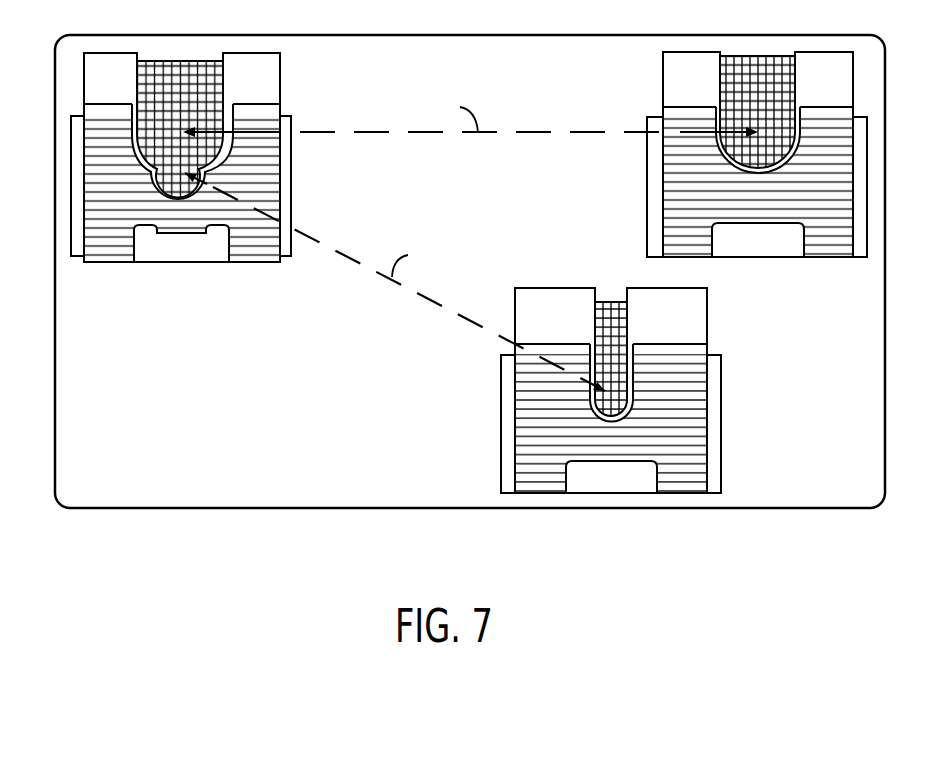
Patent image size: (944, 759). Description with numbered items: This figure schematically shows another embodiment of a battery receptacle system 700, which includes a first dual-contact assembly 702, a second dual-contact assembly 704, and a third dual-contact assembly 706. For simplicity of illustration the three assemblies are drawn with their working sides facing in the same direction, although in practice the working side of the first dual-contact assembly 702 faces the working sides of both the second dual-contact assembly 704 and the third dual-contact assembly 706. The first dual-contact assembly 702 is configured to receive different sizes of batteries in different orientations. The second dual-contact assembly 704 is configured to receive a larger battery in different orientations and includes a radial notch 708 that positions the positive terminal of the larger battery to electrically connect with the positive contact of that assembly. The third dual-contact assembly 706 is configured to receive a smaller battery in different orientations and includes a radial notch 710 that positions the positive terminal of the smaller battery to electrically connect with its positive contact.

The battery receptacle system 700 is at (358, 35).
The first dual-contact assembly 702 is at (283, 115).
The second dual-contact assembly 704 is at (732, 154).
The third dual-contact assembly 706 is at (611, 372).
The radial notch 708 is at (783, 112).
The radial notch 710 is at (623, 347).